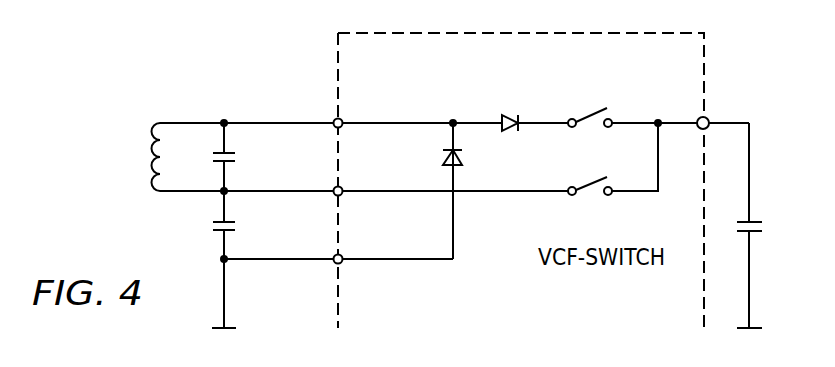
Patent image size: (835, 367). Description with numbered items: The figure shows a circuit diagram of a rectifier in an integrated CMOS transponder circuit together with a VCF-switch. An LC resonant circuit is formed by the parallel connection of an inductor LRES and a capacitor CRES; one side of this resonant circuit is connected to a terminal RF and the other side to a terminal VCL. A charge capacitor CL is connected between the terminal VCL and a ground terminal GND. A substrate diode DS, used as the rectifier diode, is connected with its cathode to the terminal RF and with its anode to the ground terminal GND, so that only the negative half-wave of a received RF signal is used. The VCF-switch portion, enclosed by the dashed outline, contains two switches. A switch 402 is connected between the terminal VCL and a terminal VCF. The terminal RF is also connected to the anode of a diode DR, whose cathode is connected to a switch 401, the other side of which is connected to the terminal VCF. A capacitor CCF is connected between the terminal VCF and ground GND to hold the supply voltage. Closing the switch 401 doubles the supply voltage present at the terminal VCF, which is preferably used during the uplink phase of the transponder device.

The switch 401 is at (593, 113).
The switch 402 is at (589, 185).
The diode DR is at (510, 110).
The substrate diode DS is at (470, 191).
The inductor LRES is at (157, 157).
The capacitor CRES is at (254, 157).
The charge capacitor CL is at (241, 259).
The capacitor CCF is at (772, 225).
The terminal RF is at (363, 110).
The terminal VCL is at (396, 180).
The ground terminal GND is at (338, 274).
The terminal VCF is at (724, 111).